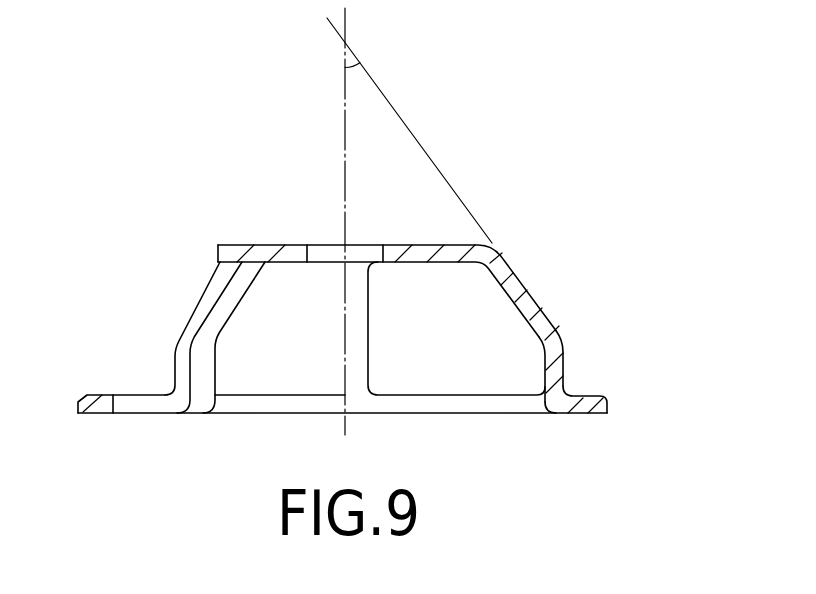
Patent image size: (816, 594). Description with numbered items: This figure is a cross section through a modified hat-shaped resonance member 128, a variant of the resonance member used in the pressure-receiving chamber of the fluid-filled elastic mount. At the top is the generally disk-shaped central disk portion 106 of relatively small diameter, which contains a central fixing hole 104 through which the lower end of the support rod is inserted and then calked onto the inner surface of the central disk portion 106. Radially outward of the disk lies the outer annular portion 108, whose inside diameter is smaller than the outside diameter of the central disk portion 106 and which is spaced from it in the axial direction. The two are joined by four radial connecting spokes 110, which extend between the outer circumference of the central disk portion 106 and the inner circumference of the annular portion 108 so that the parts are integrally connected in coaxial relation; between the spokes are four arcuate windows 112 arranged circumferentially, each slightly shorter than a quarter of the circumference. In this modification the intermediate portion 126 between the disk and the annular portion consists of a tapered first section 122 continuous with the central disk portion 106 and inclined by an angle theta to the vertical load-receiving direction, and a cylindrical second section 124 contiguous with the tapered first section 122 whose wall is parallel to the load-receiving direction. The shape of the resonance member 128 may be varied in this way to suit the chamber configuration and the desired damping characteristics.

The central fixing hole 104 is at (372, 246).
The central disk portion 106 is at (387, 228).
The annular portion 108 is at (594, 432).
The radial connecting spokes 110 is at (226, 318).
The arcuate windows 112 is at (198, 320).
The tapered first section 122 is at (548, 266).
The cylindrical second section 124 is at (582, 362).
The intermediate portion 126 is at (612, 314).
The resonance member 128 is at (401, 239).